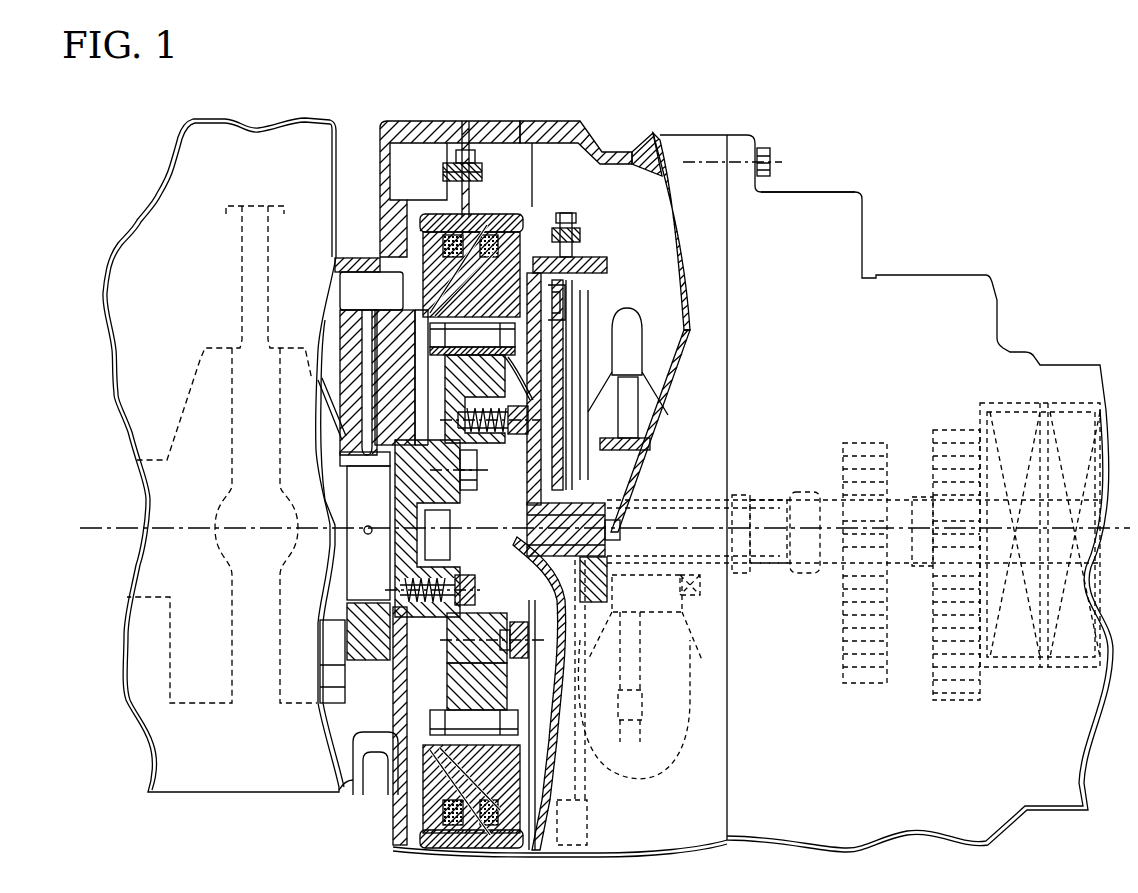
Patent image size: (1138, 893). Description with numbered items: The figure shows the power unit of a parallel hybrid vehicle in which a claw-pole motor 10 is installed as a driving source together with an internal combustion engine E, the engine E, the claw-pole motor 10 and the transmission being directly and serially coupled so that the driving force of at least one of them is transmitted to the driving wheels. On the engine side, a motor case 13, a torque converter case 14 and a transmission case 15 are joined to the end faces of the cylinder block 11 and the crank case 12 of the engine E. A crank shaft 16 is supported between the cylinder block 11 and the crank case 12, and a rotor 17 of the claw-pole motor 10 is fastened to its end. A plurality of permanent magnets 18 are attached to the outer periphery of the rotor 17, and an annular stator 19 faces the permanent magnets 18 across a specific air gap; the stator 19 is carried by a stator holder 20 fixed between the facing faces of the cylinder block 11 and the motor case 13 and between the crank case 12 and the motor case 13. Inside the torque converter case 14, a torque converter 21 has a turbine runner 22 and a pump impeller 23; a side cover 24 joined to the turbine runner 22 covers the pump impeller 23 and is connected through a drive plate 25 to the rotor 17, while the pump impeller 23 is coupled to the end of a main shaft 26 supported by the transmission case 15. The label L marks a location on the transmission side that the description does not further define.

The claw-pole motor 10 is at (413, 197).
The cylinder block 11 is at (349, 258).
The crank case 12 is at (379, 768).
The motor case 13 is at (528, 131).
The torque converter case 14 is at (630, 150).
The transmission case 15 is at (820, 200).
The crank shaft 16 is at (192, 387).
The rotor 17 is at (377, 447).
The permanent magnets 18 is at (478, 323).
The stator 19 is at (410, 300).
The stator holder 20 is at (453, 172).
The torque converter 21 is at (676, 262).
The turbine runner 22 is at (676, 344).
The pump impeller 23 is at (609, 318).
The side cover 24 is at (598, 258).
The drive plate 25 is at (487, 422).
The main shaft 26 is at (771, 498).
The internal combustion engine E is at (161, 209).
The lubricant level L is at (772, 565).